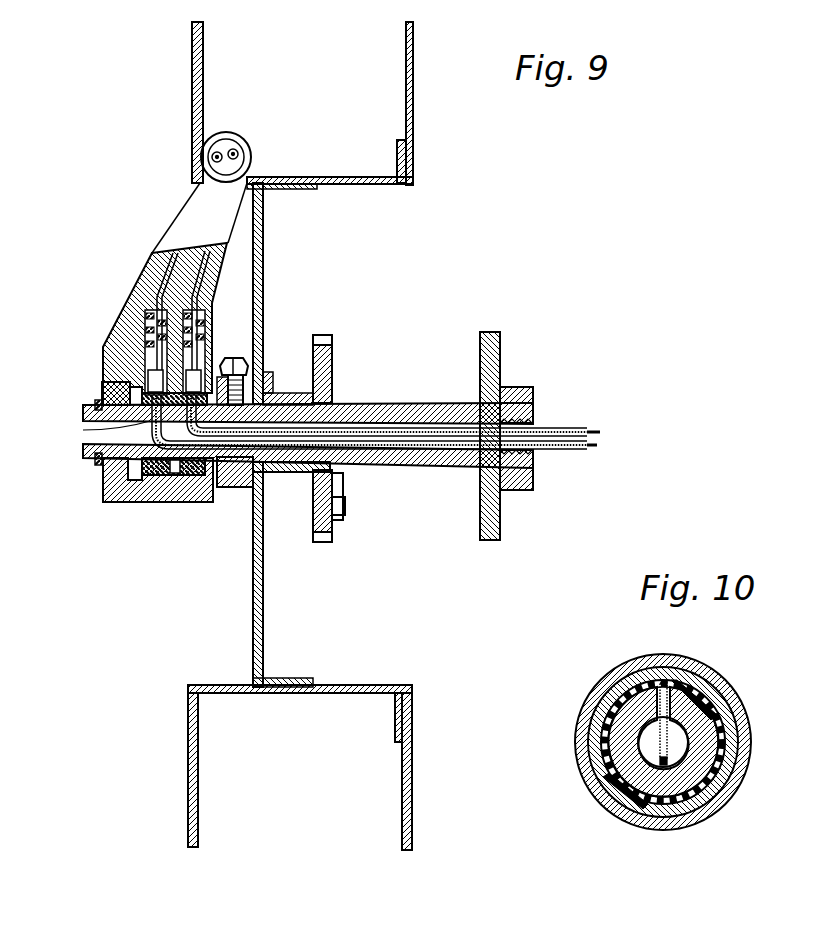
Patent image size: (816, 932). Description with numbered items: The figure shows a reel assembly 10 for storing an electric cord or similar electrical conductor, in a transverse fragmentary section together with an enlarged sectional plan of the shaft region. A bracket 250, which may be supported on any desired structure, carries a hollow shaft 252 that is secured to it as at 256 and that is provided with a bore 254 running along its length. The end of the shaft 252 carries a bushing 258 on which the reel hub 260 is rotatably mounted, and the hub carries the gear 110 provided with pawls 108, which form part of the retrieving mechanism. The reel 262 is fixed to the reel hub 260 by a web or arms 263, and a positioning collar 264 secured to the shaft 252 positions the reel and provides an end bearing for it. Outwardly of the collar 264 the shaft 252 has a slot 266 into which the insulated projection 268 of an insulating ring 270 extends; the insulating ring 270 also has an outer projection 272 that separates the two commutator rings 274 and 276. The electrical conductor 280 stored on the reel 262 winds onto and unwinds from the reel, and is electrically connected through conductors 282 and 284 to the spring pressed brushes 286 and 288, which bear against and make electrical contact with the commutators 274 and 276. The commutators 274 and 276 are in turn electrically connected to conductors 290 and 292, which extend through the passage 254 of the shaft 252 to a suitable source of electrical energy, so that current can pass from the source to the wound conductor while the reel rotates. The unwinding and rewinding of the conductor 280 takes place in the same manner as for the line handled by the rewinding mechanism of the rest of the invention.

In FIG. 9, the reel assembly 10 is at (147, 380).
In FIG. 9, the pawls 108 is at (335, 482).
In FIG. 9, the gear 110 is at (333, 520).
In FIG. 9, the bracket 250 is at (500, 516).
In FIG. 9, the hollow shaft 252 is at (445, 466).
In FIG. 10, the hollow shaft 252 is at (595, 760).
In FIG. 9, the bore 254 is at (415, 421).
In FIG. 10, the bore 254 is at (682, 748).
In FIG. 9, the securing means 256 is at (490, 457).
In FIG. 9, the bushing 258 is at (300, 477).
In FIG. 9, the reel hub 260 is at (277, 477).
In FIG. 9, the reel 262 is at (287, 693).
In FIG. 9, the web or arms 263 is at (264, 601).
In FIG. 9, the positioning collar 264 is at (237, 488).
In FIG. 9, the slot 266 is at (95, 430).
In FIG. 10, the slot 266 is at (602, 712).
In FIG. 10, the insulated projection 268 is at (617, 697).
In FIG. 9, the insulating ring 270 is at (105, 470).
In FIG. 10, the insulating ring 270 is at (720, 715).
In FIG. 9, the outer projection 272 is at (150, 478).
In FIG. 9, the commutator ring 274 is at (150, 466).
In FIG. 10, the commutator ring 274 is at (700, 692).
In FIG. 9, the commutator ring 276 is at (195, 475).
In FIG. 9, the conductors 280 is at (240, 148).
In FIG. 9, the conductor 282 is at (165, 262).
In FIG. 9, the conductor 284 is at (218, 250).
In FIG. 9, the spring pressed brush 286 is at (140, 370).
In FIG. 9, the spring pressed brush 288 is at (203, 362).
In FIG. 9, the conductor 290 is at (575, 449).
In FIG. 10, the conductor 290 is at (663, 770).
In FIG. 9, the conductor 292 is at (572, 430).